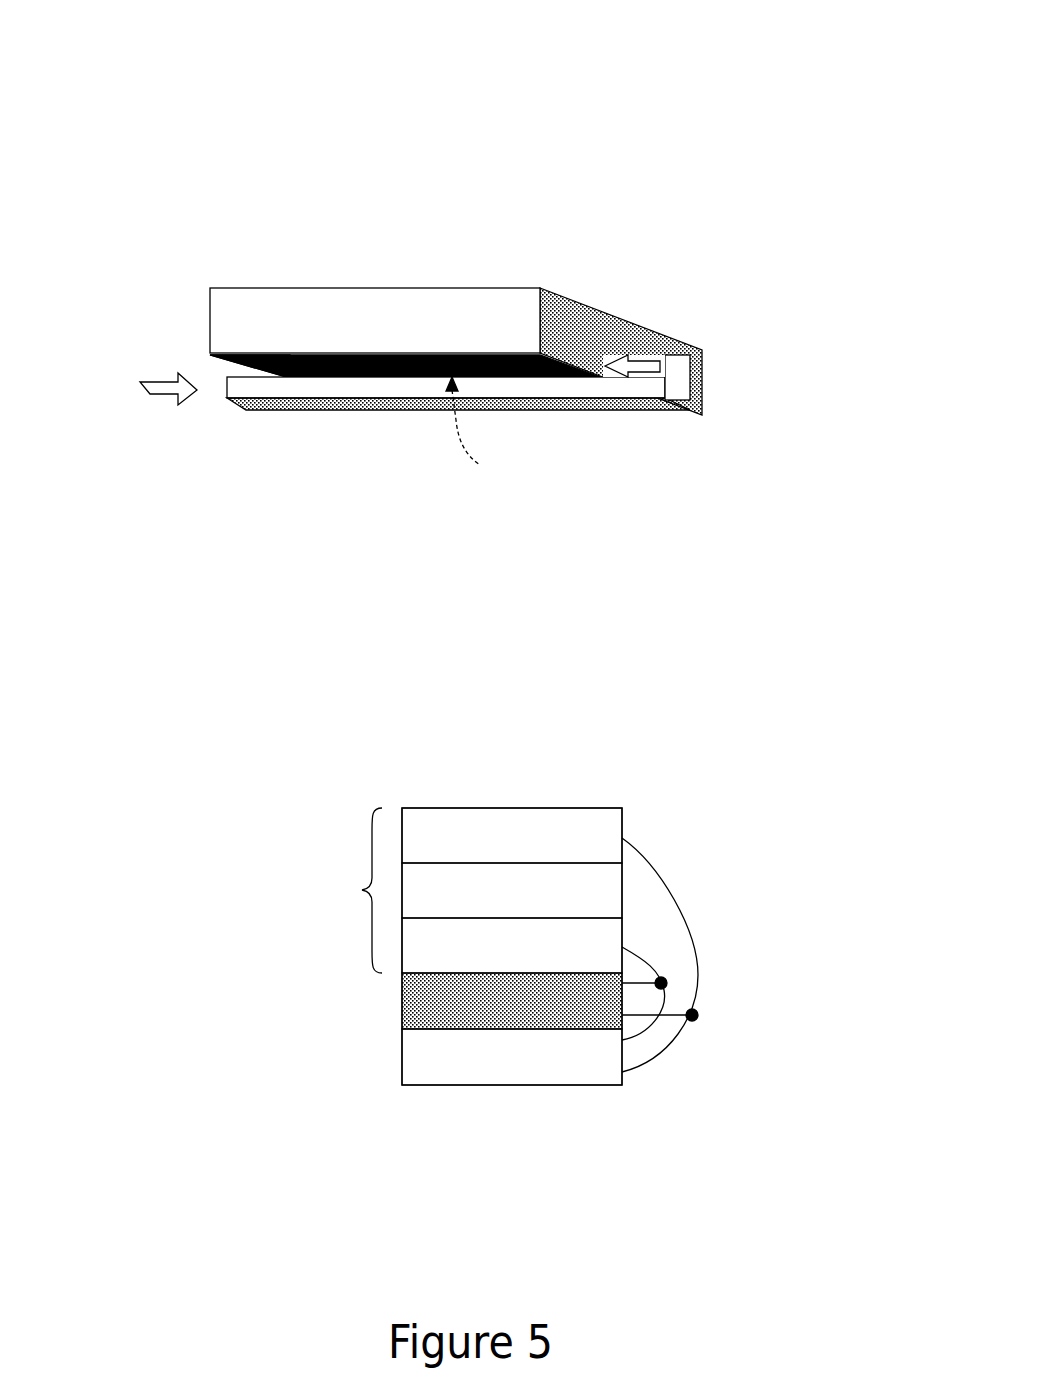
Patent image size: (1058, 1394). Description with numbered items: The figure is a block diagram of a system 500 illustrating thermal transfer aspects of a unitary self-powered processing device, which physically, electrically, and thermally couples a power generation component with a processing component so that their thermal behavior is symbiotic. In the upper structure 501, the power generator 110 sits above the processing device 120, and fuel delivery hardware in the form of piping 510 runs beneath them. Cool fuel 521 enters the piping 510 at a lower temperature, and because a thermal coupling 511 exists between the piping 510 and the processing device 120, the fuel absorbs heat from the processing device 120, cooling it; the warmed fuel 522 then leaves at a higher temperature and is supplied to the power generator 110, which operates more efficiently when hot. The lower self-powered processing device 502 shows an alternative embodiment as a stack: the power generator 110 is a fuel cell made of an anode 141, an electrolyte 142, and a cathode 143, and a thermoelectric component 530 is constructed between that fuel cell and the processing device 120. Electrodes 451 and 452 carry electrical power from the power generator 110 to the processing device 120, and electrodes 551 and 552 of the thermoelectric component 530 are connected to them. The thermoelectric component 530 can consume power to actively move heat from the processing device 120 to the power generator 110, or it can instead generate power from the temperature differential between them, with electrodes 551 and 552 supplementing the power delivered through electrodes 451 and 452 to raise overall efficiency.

The system 500 is at (151, 53).
The structure 501 is at (496, 190).
The self-powered processing device 502 is at (534, 740).
The power generator 110 is at (256, 318).
The processing device 120 is at (340, 376).
The piping 510 is at (347, 387).
The thermal coupling 511 is at (457, 398).
The fuel 521 is at (170, 386).
The fuel 522 is at (622, 355).
The anode 141 is at (452, 837).
The electrolyte 142 is at (452, 892).
The cathode 143 is at (452, 947).
The thermoelectric component 530 is at (452, 998).
The electrode 451 is at (653, 866).
The electrode 452 is at (648, 958).
The electrode 551 is at (672, 1018).
The electrode 552 is at (635, 986).